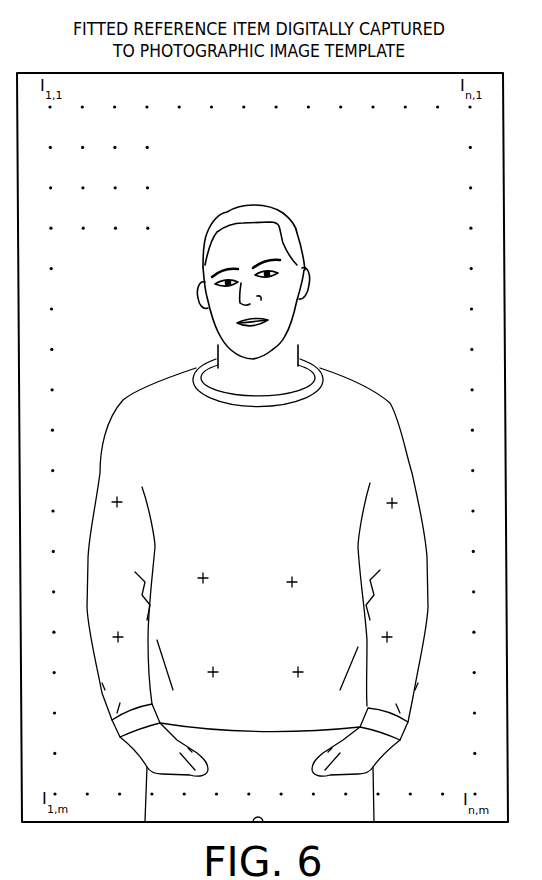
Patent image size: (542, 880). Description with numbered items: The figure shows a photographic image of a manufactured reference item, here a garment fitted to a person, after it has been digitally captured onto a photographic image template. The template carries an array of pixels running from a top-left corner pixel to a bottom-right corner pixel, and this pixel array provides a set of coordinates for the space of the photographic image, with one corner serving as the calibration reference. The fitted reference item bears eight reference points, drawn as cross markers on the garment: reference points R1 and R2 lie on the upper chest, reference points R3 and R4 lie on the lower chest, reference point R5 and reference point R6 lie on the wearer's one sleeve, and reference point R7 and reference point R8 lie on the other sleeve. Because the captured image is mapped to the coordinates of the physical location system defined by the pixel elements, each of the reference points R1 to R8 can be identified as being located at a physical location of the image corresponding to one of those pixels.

The reference point R1 is at (206, 576).
The reference point R2 is at (295, 579).
The reference point R3 is at (216, 669).
The reference point R4 is at (301, 669).
The reference point R5 is at (120, 499).
The reference point R6 is at (121, 634).
The reference point R7 is at (389, 500).
The reference point R8 is at (390, 634).